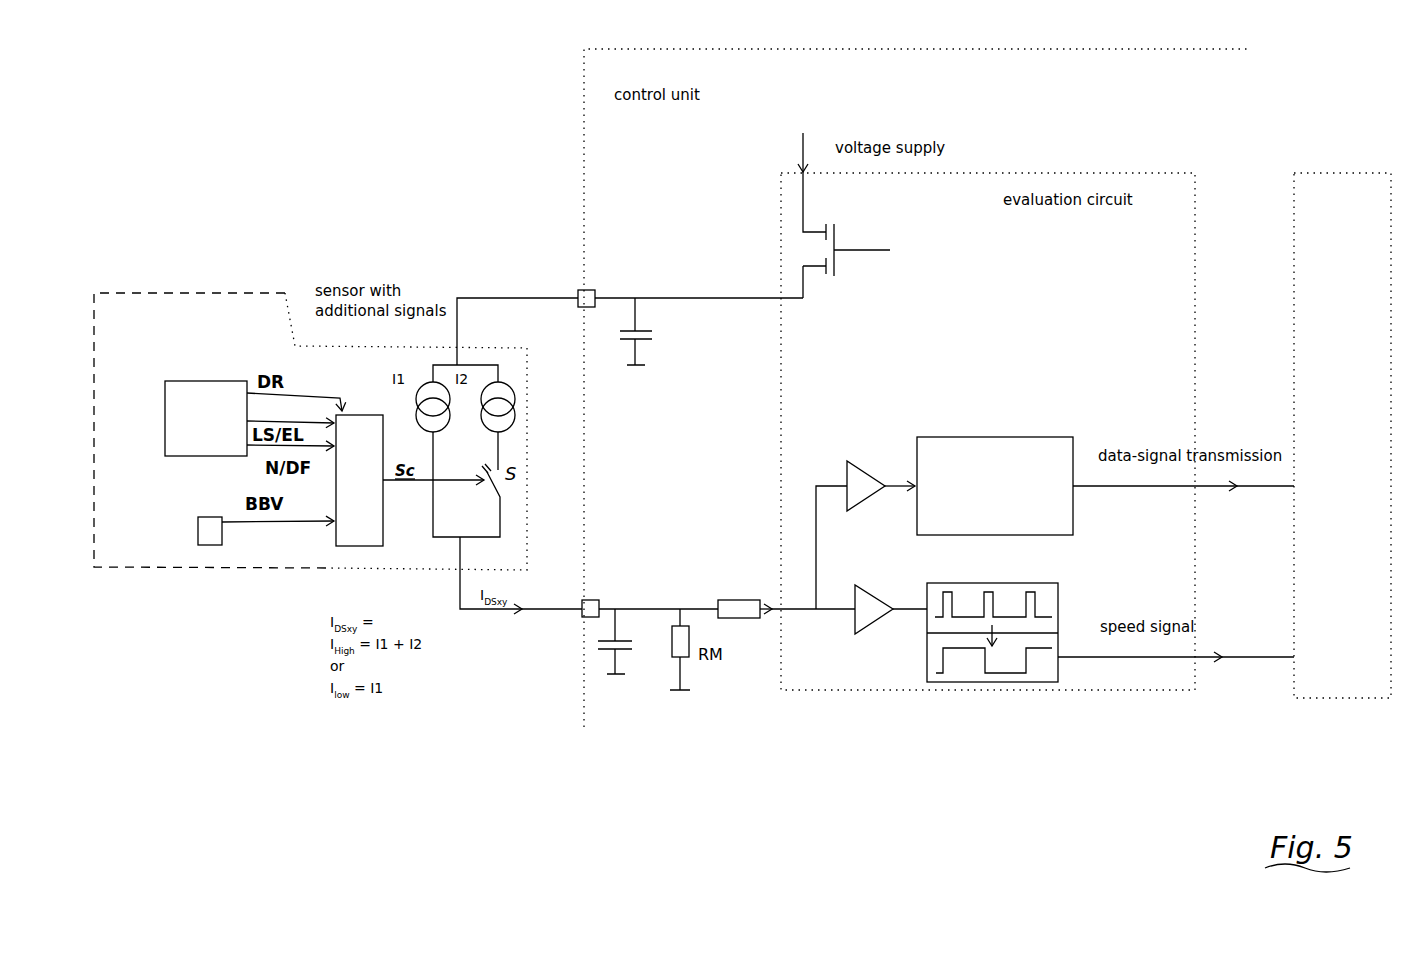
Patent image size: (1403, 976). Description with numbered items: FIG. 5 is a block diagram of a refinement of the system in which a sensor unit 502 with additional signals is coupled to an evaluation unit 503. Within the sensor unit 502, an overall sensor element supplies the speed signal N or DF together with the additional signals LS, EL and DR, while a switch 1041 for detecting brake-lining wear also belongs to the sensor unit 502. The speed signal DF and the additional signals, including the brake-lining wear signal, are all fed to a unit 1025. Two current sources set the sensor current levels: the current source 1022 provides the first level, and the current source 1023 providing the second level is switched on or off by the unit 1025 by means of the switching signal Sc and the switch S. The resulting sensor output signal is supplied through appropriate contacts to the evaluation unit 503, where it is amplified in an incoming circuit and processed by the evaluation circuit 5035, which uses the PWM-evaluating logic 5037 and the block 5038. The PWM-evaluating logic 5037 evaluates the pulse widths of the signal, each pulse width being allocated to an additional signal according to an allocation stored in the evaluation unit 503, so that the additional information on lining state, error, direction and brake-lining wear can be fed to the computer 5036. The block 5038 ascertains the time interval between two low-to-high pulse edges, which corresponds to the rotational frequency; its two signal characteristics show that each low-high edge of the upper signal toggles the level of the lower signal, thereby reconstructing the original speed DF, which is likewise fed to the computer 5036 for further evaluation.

The sensor unit 502 is at (128, 290).
The evaluation unit 503 is at (683, 48).
The switch 1041 is at (196, 531).
The current source 1022 is at (409, 398).
The current source 1023 is at (511, 383).
The unit 1025 is at (359, 480).
The evaluation circuit 5035 is at (1083, 170).
The computer 5036 is at (1300, 172).
The PWM-evaluating logic 5037 is at (950, 432).
The block 5038 is at (976, 582).